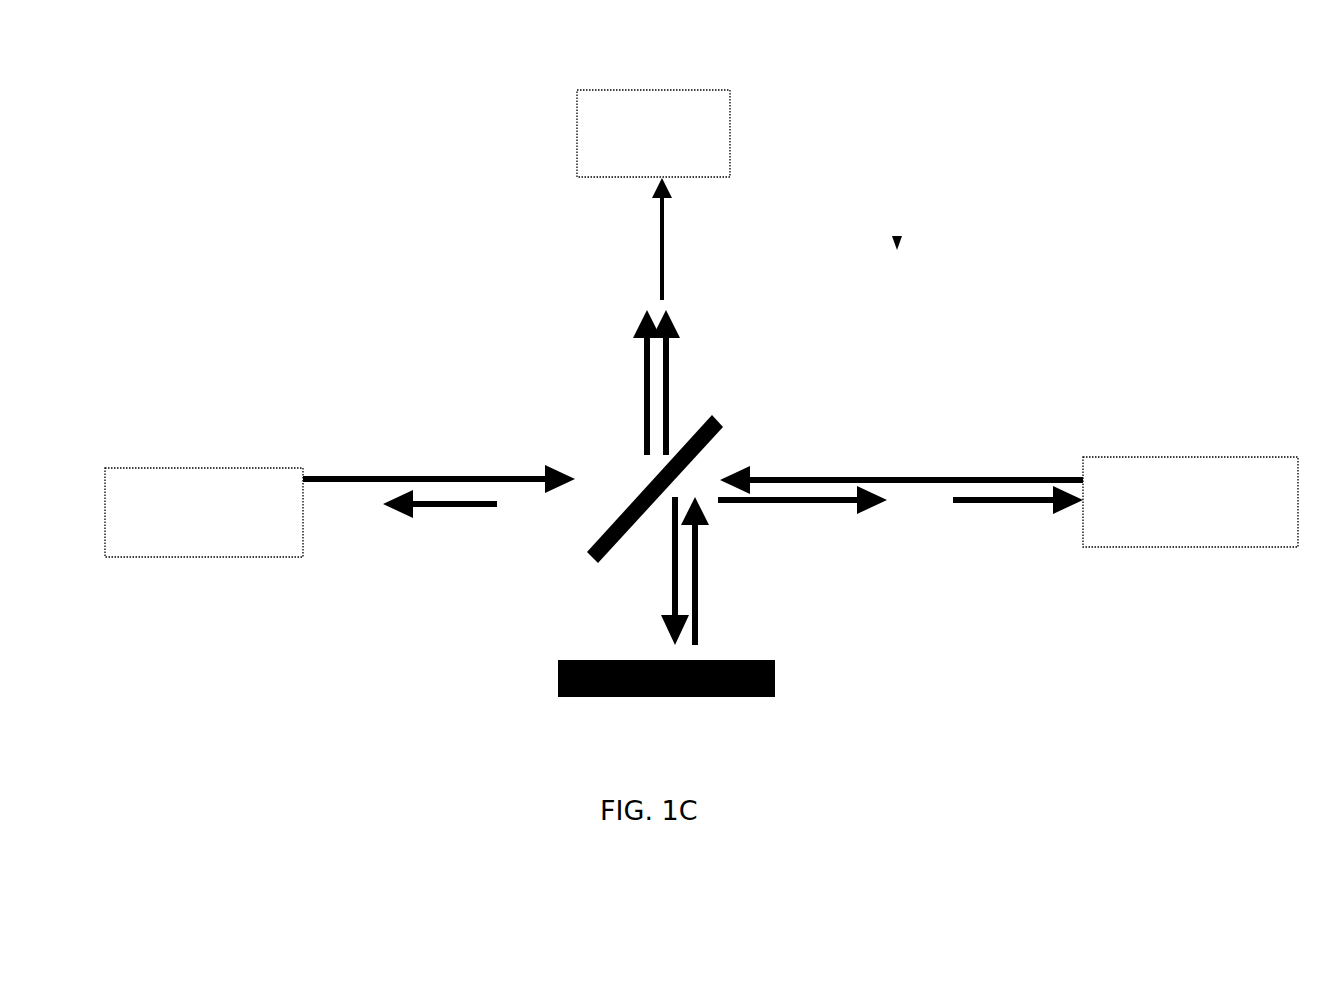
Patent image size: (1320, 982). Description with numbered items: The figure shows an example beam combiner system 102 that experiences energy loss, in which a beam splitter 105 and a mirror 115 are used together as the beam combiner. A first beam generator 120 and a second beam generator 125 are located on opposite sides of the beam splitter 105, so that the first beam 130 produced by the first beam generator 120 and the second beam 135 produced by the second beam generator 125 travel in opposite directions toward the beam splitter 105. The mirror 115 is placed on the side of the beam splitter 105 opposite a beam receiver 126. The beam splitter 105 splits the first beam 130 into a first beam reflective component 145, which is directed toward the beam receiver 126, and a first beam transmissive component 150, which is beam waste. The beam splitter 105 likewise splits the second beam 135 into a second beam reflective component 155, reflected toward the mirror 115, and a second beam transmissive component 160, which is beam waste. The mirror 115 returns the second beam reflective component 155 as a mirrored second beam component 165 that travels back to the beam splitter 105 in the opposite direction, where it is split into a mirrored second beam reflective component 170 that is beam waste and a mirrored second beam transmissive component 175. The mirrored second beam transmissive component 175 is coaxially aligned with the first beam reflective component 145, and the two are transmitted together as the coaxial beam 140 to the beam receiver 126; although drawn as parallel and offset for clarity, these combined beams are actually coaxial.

The beam combiner system 102 is at (897, 240).
The beam splitter 105 is at (642, 487).
The mirror 115 is at (738, 697).
The first beam generator 120 is at (281, 557).
The second beam generator 125 is at (1172, 547).
The beam receiver 126 is at (633, 90).
The first beam 130 is at (508, 477).
The second beam 135 is at (767, 481).
The coaxial beam 140 is at (657, 222).
The first beam reflective component 145 is at (640, 370).
The first beam transmissive component 150 is at (780, 505).
The second beam reflective component 155 is at (672, 557).
The second beam transmissive component 160 is at (485, 507).
The mirrored second beam component 165 is at (700, 578).
The mirrored second beam reflective component 170 is at (975, 505).
The mirrored second beam transmissive component 175 is at (673, 405).